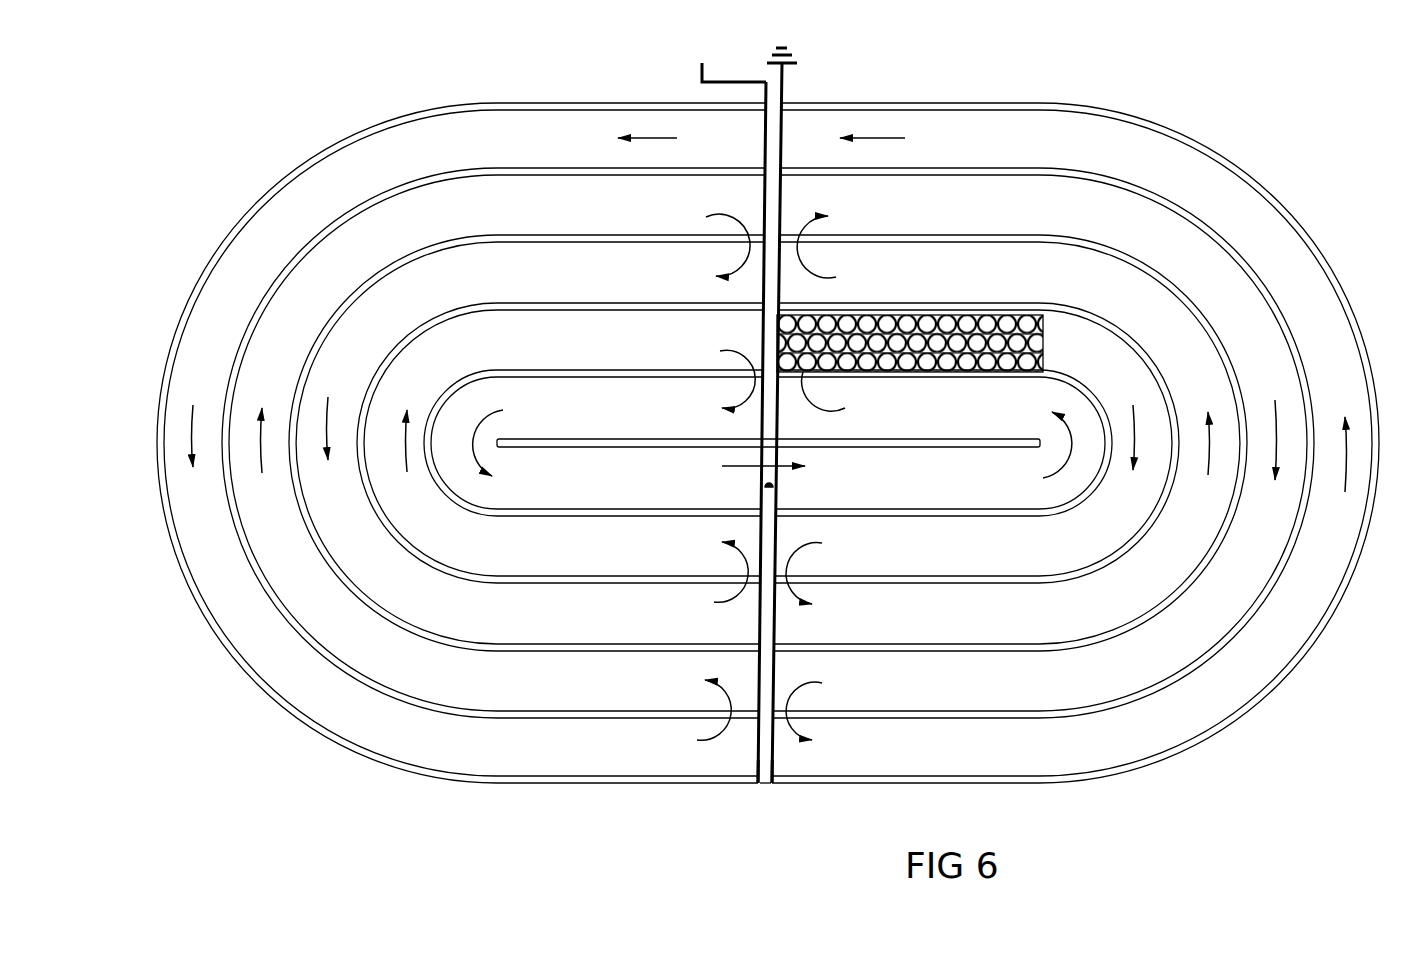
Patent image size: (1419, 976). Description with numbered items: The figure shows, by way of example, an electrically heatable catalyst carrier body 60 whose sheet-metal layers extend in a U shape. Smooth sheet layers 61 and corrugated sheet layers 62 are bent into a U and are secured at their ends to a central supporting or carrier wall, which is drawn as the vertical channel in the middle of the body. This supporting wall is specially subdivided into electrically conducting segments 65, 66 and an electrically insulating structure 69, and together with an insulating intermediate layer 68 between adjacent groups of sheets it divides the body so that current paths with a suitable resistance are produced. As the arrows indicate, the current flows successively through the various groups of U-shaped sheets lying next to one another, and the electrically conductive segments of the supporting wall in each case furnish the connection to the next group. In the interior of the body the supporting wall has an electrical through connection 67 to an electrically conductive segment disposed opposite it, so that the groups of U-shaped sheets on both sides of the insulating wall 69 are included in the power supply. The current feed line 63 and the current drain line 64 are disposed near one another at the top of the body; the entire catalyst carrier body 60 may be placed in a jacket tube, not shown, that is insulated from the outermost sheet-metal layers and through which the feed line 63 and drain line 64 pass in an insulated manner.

The catalyst carrier body 60 is at (573, 138).
The smooth sheet layers 61 is at (953, 330).
The corrugated sheet layers 62 is at (927, 335).
The current feed line 63 is at (736, 84).
The current drain line 64 is at (784, 88).
The electrically conducting segment 65 is at (757, 784).
The electrically conducting segment 66 is at (774, 784).
The electrical through connection 67 is at (776, 484).
The insulating intermediate layer 68 is at (1110, 563).
The electrically insulating structure 69 is at (765, 784).